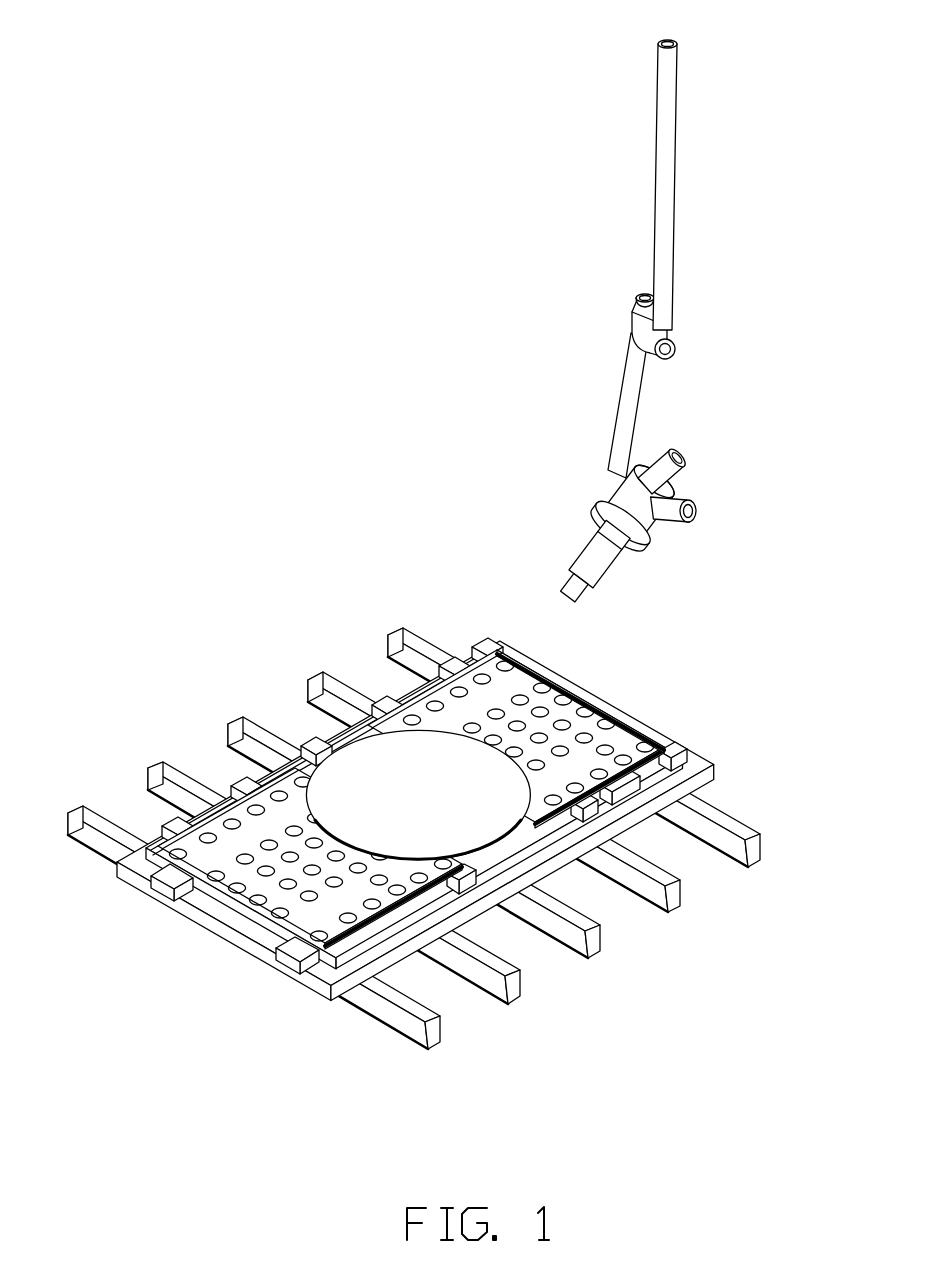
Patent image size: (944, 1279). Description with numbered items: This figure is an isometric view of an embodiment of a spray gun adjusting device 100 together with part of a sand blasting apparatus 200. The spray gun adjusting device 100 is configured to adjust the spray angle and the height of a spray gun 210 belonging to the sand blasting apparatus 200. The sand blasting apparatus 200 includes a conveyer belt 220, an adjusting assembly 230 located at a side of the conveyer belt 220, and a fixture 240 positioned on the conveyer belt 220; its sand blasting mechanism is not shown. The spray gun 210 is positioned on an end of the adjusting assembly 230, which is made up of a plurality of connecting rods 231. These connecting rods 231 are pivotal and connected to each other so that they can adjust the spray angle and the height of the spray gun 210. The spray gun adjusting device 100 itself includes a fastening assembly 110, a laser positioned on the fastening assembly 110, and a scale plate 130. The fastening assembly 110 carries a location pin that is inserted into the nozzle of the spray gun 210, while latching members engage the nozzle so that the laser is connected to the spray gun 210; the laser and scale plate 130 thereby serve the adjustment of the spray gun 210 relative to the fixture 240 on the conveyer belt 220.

The spray gun adjusting device 100 is at (584, 689).
The fastening assembly 110 is at (592, 580).
The scale plate 130 is at (488, 790).
The sand blasting apparatus 200 is at (465, 544).
The spray gun 210 is at (630, 497).
The conveyer belt 220 is at (260, 732).
The adjusting assembly 230 is at (641, 299).
The connecting rods 231 is at (667, 148).
The fixture 240 is at (253, 832).